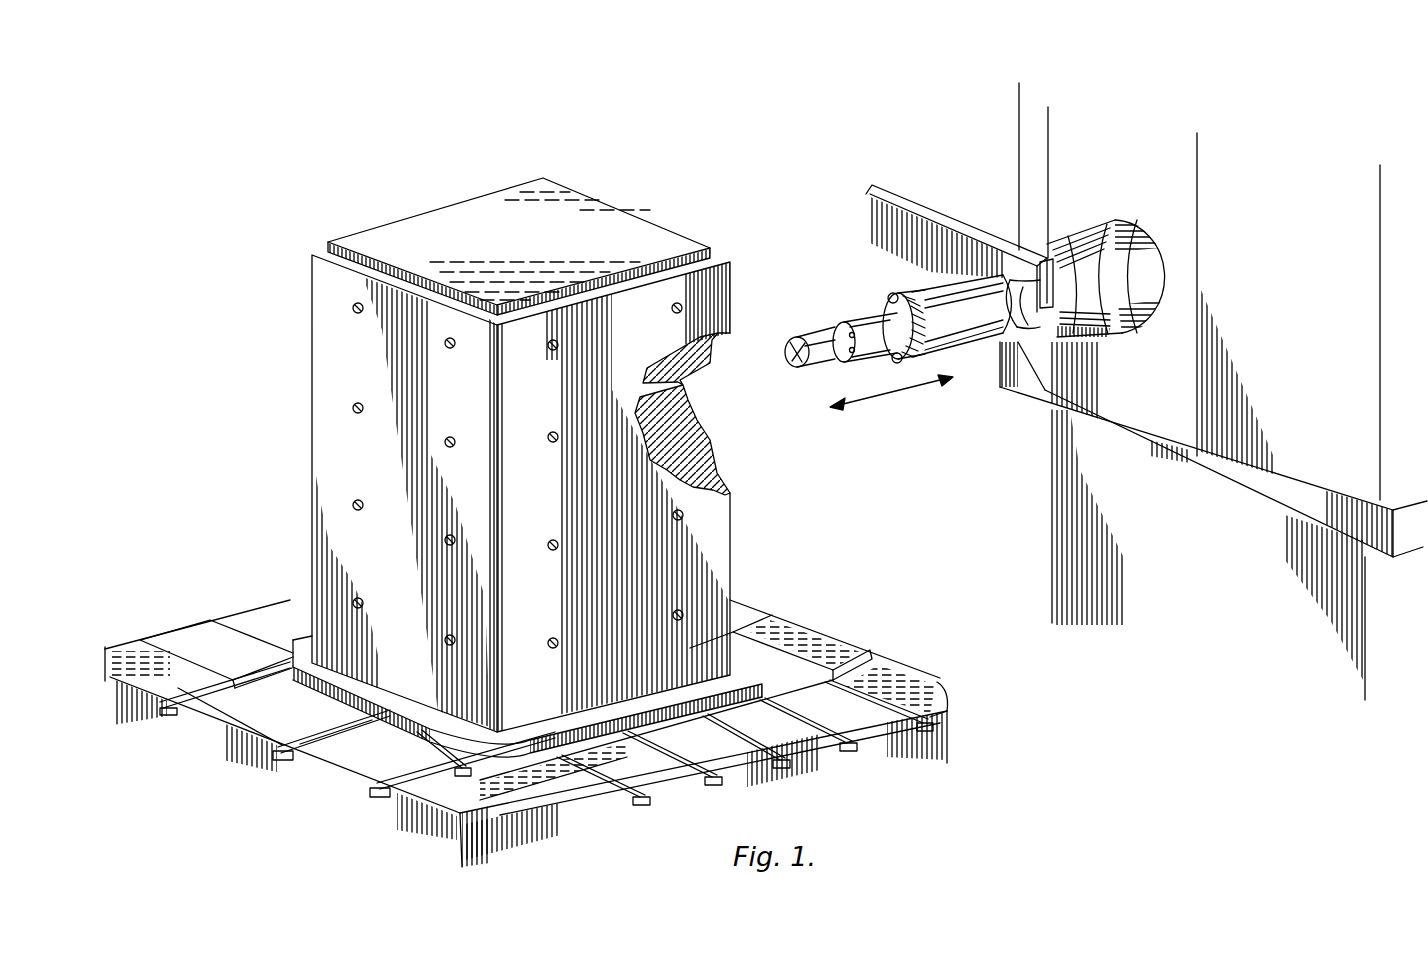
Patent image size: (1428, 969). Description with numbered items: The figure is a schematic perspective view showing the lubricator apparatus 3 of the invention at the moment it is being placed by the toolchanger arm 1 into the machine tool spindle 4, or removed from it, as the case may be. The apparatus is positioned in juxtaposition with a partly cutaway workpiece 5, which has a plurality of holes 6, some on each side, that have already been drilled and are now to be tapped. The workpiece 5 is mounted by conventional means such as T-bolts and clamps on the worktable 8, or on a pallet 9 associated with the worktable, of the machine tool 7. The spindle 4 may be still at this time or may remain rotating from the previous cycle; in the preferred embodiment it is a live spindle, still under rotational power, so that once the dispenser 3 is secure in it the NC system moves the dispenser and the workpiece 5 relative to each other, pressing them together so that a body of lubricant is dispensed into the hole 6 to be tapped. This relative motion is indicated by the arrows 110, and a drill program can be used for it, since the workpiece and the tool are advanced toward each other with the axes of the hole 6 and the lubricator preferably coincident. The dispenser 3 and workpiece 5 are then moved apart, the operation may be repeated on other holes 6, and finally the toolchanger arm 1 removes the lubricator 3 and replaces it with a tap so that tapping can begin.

The toolchanger arm 1 is at (932, 201).
The lubricator apparatus 3 is at (887, 289).
The machine tool spindle 4 is at (1097, 267).
The workpiece 5 is at (646, 220).
The holes 6 is at (682, 615).
The machine tool 7 is at (1420, 373).
The worktable 8 is at (943, 688).
The pallet 9 is at (793, 667).
The arrows 110 is at (887, 394).